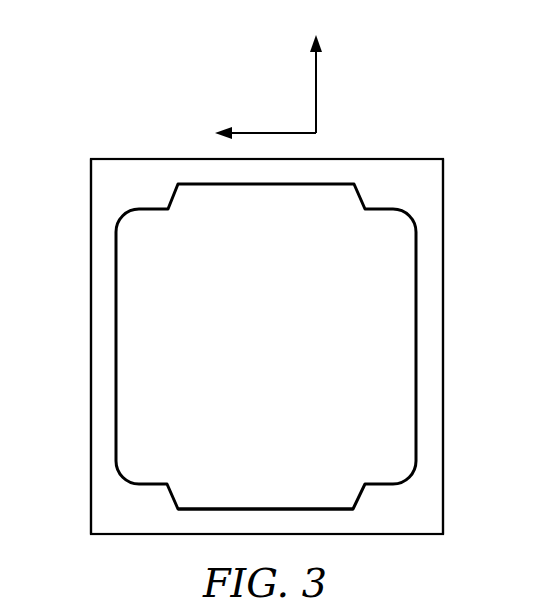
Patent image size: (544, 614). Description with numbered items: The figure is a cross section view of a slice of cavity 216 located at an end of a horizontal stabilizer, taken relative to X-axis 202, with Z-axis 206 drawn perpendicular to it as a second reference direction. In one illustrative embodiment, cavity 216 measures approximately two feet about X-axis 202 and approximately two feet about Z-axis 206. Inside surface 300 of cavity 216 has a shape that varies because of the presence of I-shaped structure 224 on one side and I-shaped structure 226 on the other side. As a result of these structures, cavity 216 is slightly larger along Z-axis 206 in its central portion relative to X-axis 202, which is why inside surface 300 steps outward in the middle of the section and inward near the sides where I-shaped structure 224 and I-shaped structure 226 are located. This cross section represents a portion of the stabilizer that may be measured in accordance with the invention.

The X-axis 202 is at (270, 133).
The Z-axis 206 is at (316, 85).
The cavity 216 is at (290, 363).
The I-shaped structure 224 is at (91, 301).
The I-shaped structure 226 is at (443, 300).
The inside surface 300 is at (236, 509).